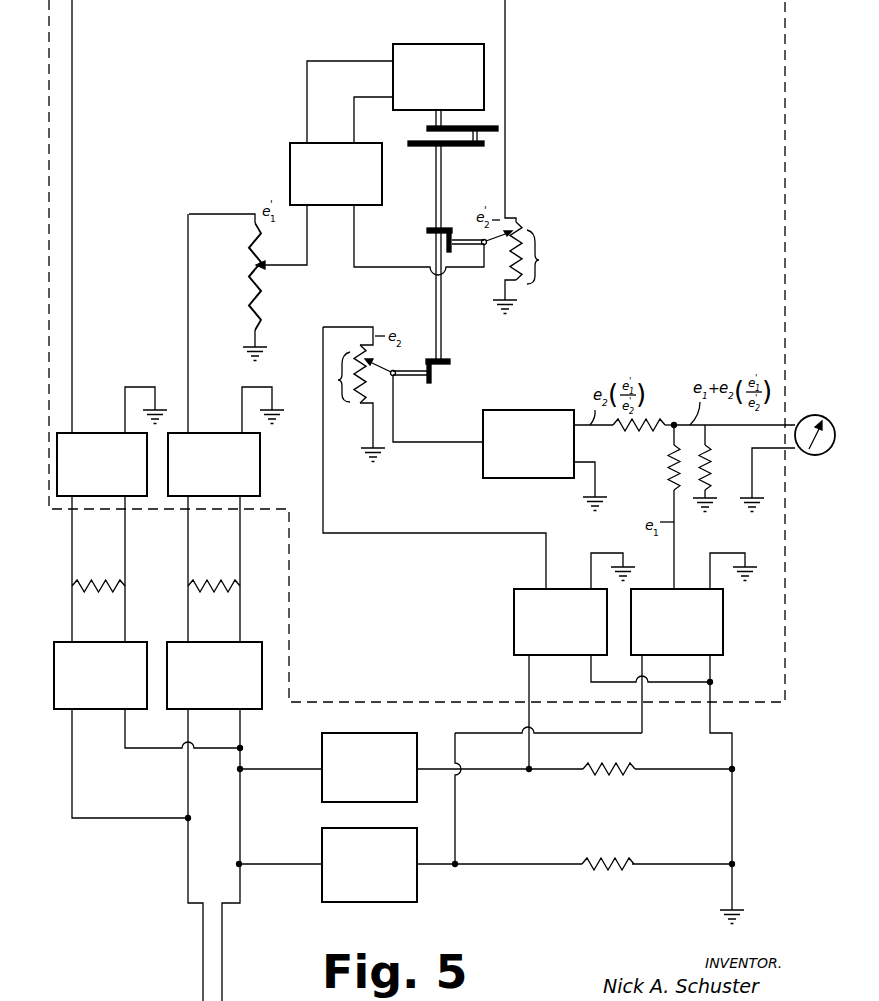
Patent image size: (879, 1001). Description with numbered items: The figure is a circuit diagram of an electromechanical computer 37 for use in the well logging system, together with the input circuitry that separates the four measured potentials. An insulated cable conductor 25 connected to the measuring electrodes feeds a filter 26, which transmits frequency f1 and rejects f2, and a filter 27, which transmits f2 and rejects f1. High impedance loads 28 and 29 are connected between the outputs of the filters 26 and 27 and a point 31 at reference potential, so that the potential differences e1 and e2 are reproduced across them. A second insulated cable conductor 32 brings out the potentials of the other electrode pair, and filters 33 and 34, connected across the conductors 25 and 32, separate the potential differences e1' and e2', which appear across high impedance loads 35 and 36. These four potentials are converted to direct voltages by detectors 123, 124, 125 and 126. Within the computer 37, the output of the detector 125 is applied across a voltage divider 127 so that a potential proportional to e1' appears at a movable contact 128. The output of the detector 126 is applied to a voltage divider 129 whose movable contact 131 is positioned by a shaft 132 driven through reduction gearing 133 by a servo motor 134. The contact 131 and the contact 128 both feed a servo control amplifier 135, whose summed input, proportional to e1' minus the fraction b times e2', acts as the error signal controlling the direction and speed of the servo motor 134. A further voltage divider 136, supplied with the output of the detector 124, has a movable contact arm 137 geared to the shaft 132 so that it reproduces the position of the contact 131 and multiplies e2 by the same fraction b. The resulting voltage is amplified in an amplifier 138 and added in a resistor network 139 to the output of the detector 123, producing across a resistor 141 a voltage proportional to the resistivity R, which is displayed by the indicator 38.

The insulated cable conductor 25 is at (222, 980).
The filter 26 is at (366, 827).
The filter 27 is at (370, 732).
The high impedance load 28 is at (603, 861).
The high impedance load 29 is at (612, 766).
The point at reference potential 31 is at (742, 912).
The insulated cable conductor 32 is at (203, 970).
The filter 33 is at (222, 710).
The filter 34 is at (98, 710).
The high impedance load 35 is at (214, 583).
The high impedance load 36 is at (100, 583).
The computer 37 is at (785, 345).
The indicator 38 is at (805, 418).
The detector 123 is at (723, 629).
The detector 124 is at (514, 627).
The detector 125 is at (200, 432).
The detector 126 is at (85, 432).
The voltage divider 127 is at (262, 233).
The movable contact 128 is at (264, 268).
The voltage divider 129 is at (520, 224).
The movable contact 131 is at (483, 248).
The shaft 132 is at (442, 196).
The reduction gearing 133 is at (452, 146).
The servo motor 134 is at (458, 43).
The servo control amplifier 135 is at (290, 185).
The voltage divider 136 is at (374, 344).
The movable contact arm 137 is at (378, 362).
The amplifier 138 is at (512, 409).
The resistor network 139 is at (657, 432).
The resistor 141 is at (710, 460).